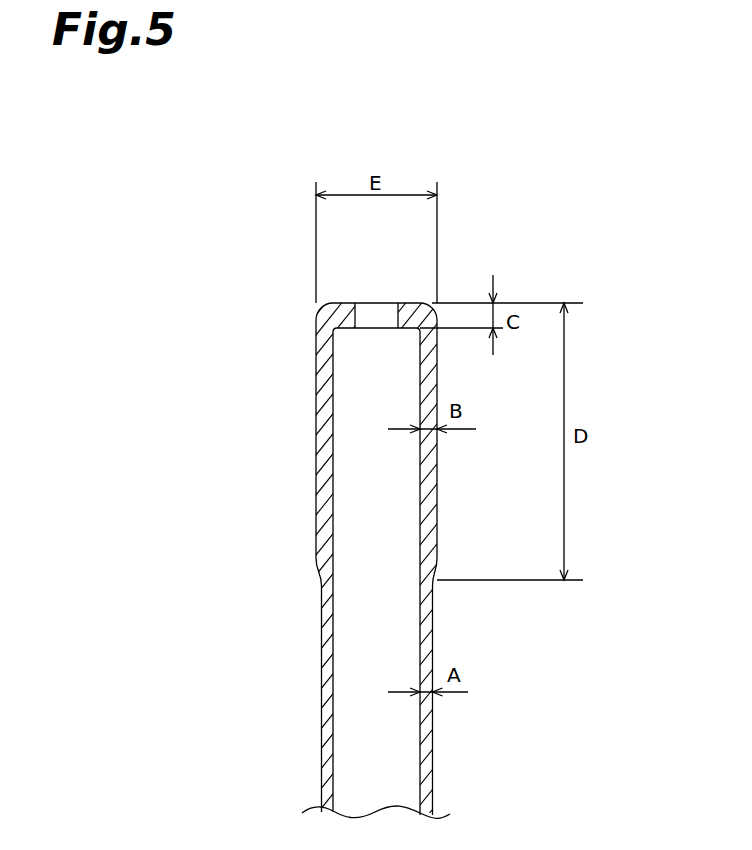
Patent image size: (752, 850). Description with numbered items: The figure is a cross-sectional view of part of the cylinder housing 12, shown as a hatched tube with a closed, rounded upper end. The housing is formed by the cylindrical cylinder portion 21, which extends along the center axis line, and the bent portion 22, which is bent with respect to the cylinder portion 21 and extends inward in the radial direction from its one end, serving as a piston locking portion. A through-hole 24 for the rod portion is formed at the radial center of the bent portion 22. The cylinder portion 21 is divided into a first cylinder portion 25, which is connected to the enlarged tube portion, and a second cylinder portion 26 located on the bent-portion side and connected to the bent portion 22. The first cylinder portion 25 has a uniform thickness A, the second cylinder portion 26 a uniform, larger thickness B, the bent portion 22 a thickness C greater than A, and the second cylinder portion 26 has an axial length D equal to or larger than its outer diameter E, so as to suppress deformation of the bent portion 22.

The cylinder housing 12 is at (433, 773).
The cylinder portion 21 is at (242, 566).
The bent portion 22 is at (355, 303).
The through-hole 24 is at (398, 303).
The first cylinder portion 25 is at (272, 685).
The second cylinder portion 26 is at (323, 493).